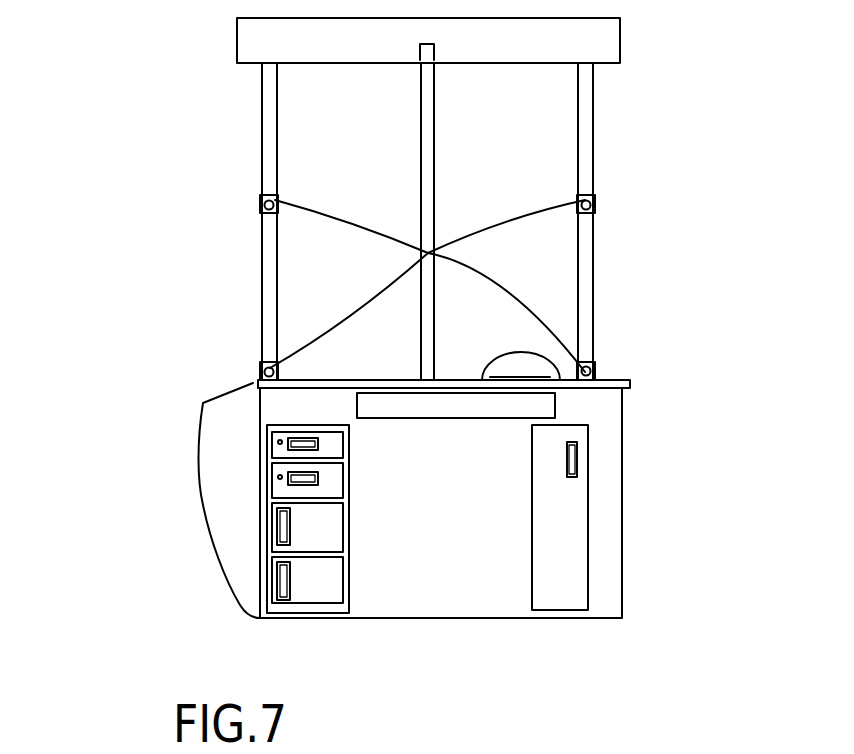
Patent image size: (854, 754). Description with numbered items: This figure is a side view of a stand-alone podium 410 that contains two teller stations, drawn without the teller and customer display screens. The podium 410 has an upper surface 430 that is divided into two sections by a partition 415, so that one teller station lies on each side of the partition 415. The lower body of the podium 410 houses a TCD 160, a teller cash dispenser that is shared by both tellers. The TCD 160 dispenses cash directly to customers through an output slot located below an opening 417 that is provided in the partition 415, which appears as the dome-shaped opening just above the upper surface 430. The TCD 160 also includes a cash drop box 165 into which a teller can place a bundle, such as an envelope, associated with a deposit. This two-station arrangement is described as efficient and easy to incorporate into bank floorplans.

The stand-alone podium 410 is at (527, 199).
The partition 415 is at (543, 262).
The opening 417 is at (535, 358).
The upper surface 430 is at (607, 380).
The TCD 160 is at (210, 455).
The cash drop box 165 is at (526, 733).